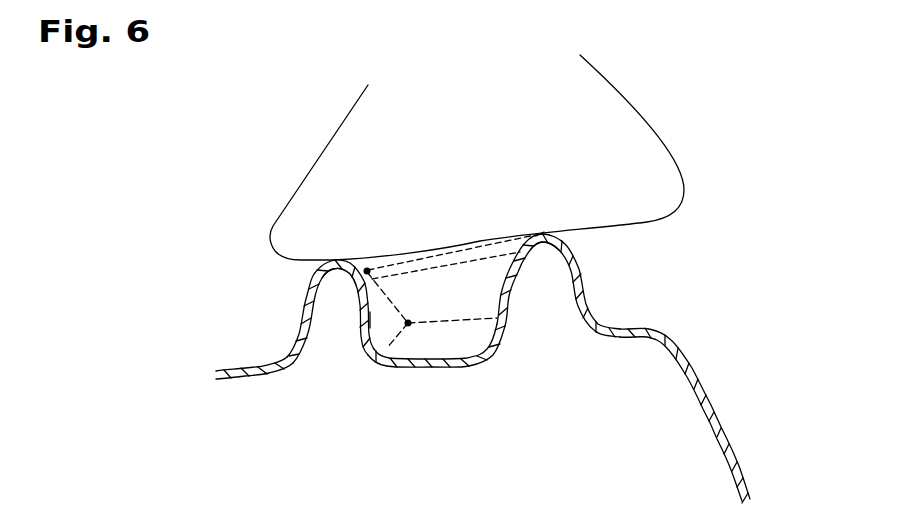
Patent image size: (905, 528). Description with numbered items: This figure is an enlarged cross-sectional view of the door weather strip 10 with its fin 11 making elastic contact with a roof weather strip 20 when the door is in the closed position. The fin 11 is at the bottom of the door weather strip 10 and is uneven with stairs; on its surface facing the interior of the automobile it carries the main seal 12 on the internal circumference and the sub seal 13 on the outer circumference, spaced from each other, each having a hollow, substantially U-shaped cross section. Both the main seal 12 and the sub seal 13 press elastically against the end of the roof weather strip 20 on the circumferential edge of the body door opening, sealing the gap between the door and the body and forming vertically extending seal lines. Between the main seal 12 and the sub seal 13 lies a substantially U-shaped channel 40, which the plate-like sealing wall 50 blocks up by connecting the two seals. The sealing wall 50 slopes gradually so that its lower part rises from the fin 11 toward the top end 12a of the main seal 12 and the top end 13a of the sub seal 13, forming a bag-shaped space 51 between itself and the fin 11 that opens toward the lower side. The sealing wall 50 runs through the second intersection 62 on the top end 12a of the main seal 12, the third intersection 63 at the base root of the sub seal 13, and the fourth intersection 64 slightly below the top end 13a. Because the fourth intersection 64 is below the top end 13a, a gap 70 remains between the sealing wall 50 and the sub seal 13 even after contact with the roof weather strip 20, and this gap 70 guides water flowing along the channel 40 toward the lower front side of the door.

The door weather strip 10 is at (508, 308).
The fin 11 is at (481, 308).
The main seal 12 is at (588, 245).
The top end of the main seal 12a is at (543, 234).
The sub seal 13 is at (293, 238).
The top end of the sub seal 13a is at (340, 258).
The roof weather strip 20 is at (686, 205).
The channel 40 is at (450, 352).
The sealing wall 50 is at (423, 247).
The space 51 is at (437, 297).
The second intersection 62 is at (542, 234).
The third intersection 63 is at (373, 318).
The fourth intersection 64 is at (366, 268).
The gap 70 is at (374, 277).